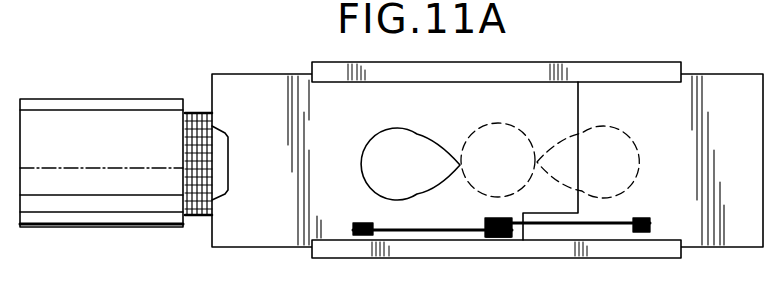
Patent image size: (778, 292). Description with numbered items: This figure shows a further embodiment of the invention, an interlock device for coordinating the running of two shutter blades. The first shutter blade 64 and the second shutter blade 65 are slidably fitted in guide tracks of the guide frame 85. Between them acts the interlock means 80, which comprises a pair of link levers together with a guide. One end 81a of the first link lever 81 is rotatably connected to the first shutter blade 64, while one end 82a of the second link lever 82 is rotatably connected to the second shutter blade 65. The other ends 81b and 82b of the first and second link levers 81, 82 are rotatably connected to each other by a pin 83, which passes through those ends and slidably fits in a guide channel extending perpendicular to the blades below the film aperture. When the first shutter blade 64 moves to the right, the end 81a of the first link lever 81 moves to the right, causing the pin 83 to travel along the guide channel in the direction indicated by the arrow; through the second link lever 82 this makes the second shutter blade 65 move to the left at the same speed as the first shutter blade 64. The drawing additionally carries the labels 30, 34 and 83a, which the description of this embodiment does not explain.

The light source housing 30 is at (88, 99).
The threaded connector 34 is at (195, 122).
The first shutter blade 64 is at (268, 232).
The second shutter blade 65 is at (735, 232).
The interlock means 80 is at (554, 226).
The first link lever 81 is at (430, 232).
The one end of the first link lever 81a is at (360, 224).
The other end of the first link lever 81b is at (490, 238).
The second link lever 82 is at (612, 224).
The one end of the second link lever 82a is at (641, 219).
The other end of the second link lever 82b is at (488, 222).
The pin 83 is at (504, 220).
The conductor junction 83a is at (500, 238).
The guide frame 85 is at (641, 69).